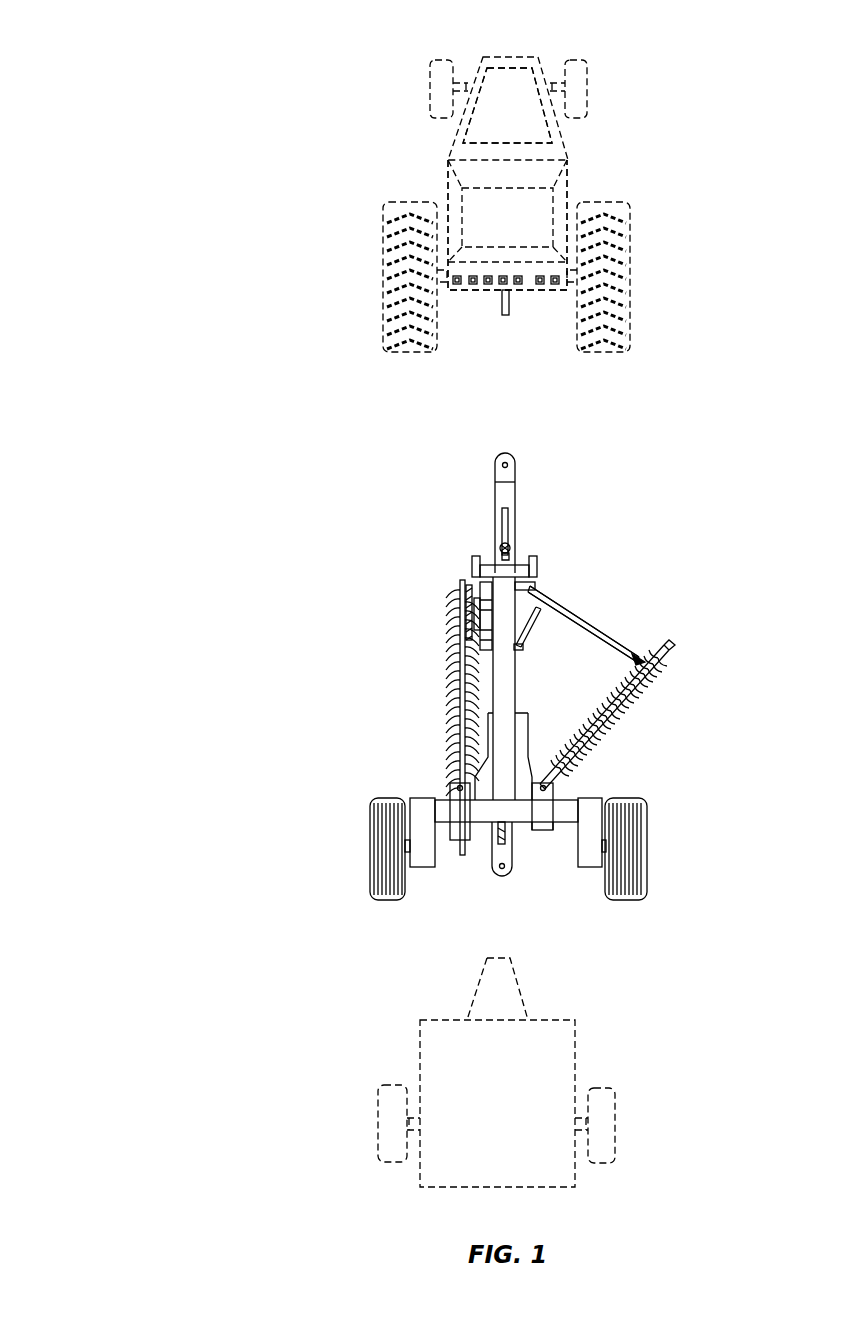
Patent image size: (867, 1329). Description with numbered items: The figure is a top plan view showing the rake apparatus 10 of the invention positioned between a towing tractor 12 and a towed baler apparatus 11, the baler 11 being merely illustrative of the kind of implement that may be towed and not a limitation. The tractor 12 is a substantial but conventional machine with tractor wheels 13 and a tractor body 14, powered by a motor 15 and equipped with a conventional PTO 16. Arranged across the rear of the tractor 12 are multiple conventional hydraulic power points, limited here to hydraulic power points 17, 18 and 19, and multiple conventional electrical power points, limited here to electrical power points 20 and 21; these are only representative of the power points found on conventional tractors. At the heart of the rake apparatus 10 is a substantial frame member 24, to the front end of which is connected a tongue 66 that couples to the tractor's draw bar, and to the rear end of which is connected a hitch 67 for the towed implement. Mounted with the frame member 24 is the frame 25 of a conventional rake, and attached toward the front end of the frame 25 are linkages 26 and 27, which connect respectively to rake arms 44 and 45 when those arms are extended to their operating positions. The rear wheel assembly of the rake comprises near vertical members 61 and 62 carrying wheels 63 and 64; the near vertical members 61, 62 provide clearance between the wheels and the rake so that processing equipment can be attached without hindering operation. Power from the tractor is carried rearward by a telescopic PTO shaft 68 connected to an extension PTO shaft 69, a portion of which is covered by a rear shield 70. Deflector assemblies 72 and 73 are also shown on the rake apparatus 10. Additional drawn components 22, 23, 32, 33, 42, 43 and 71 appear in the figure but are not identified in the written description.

The rake apparatus 10 is at (378, 527).
The baler apparatus 11 is at (373, 1042).
The tractor 12 is at (383, 77).
The tractor wheels 13 is at (392, 205).
The tractor body 14 is at (544, 207).
The motor 15 is at (497, 75).
The PTO 16 is at (505, 315).
The hydraulic power point 17 is at (457, 285).
The hydraulic power point 18 is at (472, 285).
The hydraulic power point 19 is at (487, 287).
The electrical power point 20 is at (502, 287).
The electrical power point 21 is at (520, 287).
The connector 22 is at (540, 285).
The connector 23 is at (555, 285).
The frame member 24 is at (505, 497).
The frame 25 is at (515, 690).
The linkage 26 is at (548, 600).
The linkage 27 is at (460, 607).
The brace 32 is at (534, 622).
The plate 33 is at (468, 600).
The support arm 42 is at (604, 632).
The bracket 43 is at (485, 632).
The rake arm 44 is at (668, 650).
The rake arm 45 is at (457, 702).
The near vertical member 61 is at (590, 805).
The near vertical member 62 is at (425, 805).
The wheel 63 is at (645, 835).
The wheel 64 is at (403, 872).
The tongue 66 is at (511, 472).
The hitch 67 is at (502, 870).
The telescopic PTO shaft 68 is at (508, 523).
The extension PTO shaft 69 is at (512, 551).
The rear shield 70 is at (500, 545).
The rear tongue 71 is at (510, 848).
The deflector assembly 72 is at (530, 762).
The deflector assembly 73 is at (455, 785).